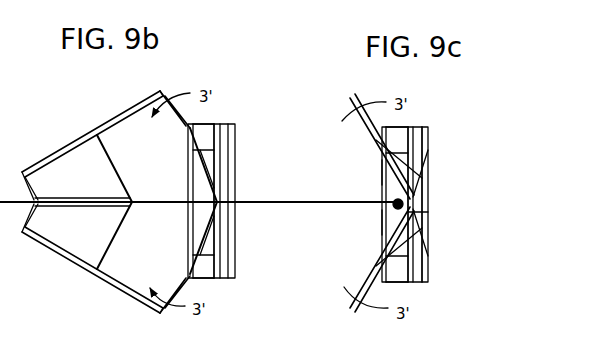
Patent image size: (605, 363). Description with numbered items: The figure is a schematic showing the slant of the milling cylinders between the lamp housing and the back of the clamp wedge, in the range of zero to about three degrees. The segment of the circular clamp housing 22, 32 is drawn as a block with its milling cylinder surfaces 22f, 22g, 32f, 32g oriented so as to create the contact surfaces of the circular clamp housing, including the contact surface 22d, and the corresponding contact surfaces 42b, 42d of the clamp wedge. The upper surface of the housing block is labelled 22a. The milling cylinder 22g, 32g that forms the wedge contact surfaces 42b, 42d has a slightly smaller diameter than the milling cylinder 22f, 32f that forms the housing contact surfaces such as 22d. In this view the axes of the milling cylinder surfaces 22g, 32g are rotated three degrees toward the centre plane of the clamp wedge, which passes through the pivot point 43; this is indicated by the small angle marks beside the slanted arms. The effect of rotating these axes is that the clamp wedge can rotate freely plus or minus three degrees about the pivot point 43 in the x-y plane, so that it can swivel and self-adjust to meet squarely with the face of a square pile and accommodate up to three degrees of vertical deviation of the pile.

In FIG. 9b, the circular clamp housing 22 is at (207, 123).
In FIG. 9c, the circular clamp housing 22 is at (405, 125).
In FIG. 9b, the block upper end face 22a is at (235, 135).
In FIG. 9c, the block upper end face 22a is at (425, 150).
In FIG. 9b, the contact surface of the circular clamp housing 22d is at (235, 279).
In FIG. 9c, the contact surface of the circular clamp housing 22d is at (428, 280).
In FIG. 9b, the milling cylinder surface 22f is at (21, 168).
In FIG. 9b, the milling cylinder surface 22g is at (33, 174).
In FIG. 9b, the circular clamp housing 32 is at (210, 279).
In FIG. 9c, the circular clamp housing 32 is at (410, 283).
In FIG. 9b, the milling cylinder surface 32f is at (18, 236).
In FIG. 9b, the milling cylinder surface 32g is at (30, 230).
In FIG. 9c, the contact surface of the clamp wedge 42b is at (380, 172).
In FIG. 9c, the contact surface of the clamp wedge 42d is at (380, 222).
In FIG. 9c, the pivot point 43 is at (428, 162).